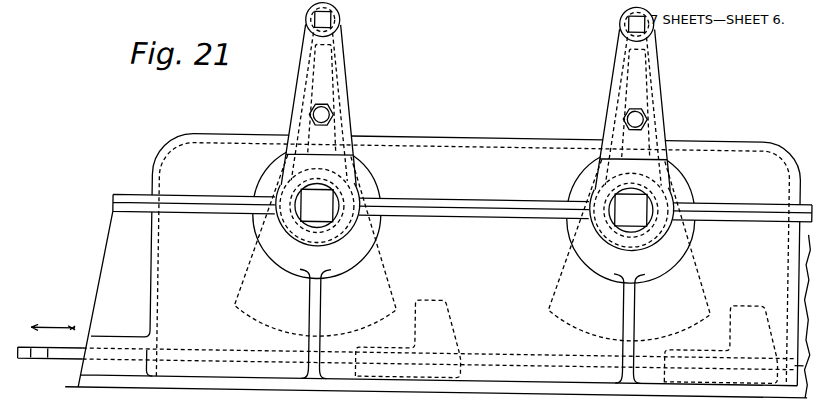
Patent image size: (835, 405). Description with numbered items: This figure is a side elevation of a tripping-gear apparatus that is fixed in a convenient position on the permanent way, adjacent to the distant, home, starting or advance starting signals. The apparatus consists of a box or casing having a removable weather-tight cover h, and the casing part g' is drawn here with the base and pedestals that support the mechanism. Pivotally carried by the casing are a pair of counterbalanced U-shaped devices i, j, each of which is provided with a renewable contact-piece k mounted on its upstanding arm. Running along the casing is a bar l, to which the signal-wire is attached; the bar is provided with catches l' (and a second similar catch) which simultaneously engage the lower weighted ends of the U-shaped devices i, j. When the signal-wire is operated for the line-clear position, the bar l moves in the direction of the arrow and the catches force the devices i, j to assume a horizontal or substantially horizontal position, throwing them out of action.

The removable weather-tight cover h is at (445, 259).
The frame base g' is at (438, 273).
The counterbalanced U-shaped device i is at (345, 65).
The counterbalanced U-shaped device j is at (657, 64).
The renewable contact-piece k is at (478, 96).
The bar l is at (406, 354).
The catch l' is at (408, 338).